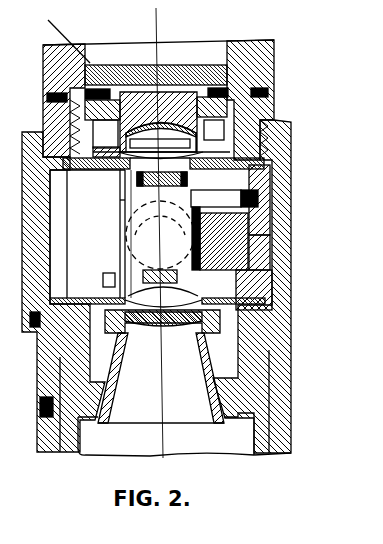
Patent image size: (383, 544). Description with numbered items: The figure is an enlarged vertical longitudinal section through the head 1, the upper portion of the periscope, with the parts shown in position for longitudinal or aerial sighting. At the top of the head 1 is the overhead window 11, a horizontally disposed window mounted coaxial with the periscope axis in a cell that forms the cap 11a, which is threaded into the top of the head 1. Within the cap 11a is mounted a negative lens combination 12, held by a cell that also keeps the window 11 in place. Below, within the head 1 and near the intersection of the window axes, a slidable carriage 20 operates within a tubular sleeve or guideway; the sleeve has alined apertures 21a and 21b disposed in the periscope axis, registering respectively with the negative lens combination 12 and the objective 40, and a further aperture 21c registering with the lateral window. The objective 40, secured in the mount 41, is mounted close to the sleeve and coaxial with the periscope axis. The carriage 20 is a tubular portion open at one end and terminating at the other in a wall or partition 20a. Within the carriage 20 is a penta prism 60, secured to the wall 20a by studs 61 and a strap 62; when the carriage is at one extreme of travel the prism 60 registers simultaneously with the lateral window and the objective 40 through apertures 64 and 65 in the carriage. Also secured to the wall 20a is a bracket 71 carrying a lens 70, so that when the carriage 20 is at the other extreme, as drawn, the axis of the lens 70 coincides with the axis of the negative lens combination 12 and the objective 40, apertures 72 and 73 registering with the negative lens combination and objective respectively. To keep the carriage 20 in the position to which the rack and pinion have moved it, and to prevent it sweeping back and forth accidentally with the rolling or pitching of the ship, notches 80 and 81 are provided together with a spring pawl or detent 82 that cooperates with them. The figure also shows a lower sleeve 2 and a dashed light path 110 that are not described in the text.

The head 1 is at (298, 311).
The bottom sleeve ring 2 is at (293, 434).
The overhead window 11 is at (194, 63).
The cap 11a is at (275, 70).
The negative lens combination 12 is at (130, 118).
The slidable carriage 20 is at (131, 182).
The wall 20a is at (268, 178).
The aperture 21a is at (78, 232).
The aperture 21b is at (65, 302).
The aperture 21c is at (103, 234).
The objective 40 is at (151, 327).
The mount 41 is at (133, 422).
The penta prism 60 is at (220, 238).
The studs 61 is at (186, 184).
The strap 62 is at (161, 224).
The aperture 64 is at (252, 229).
The aperture 65 is at (254, 293).
The lens 70 is at (126, 214).
The bracket 71 is at (278, 198).
The aperture 72 is at (122, 199).
The aperture 73 is at (110, 273).
The notch 80 is at (270, 276).
The notch 81 is at (163, 284).
The spring pawl 82 is at (152, 272).
The light path 110 is at (160, 235).